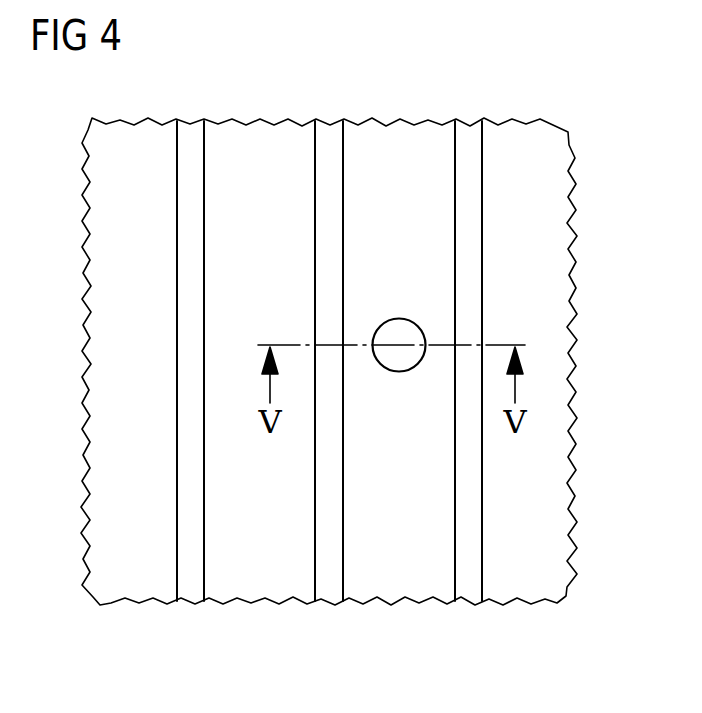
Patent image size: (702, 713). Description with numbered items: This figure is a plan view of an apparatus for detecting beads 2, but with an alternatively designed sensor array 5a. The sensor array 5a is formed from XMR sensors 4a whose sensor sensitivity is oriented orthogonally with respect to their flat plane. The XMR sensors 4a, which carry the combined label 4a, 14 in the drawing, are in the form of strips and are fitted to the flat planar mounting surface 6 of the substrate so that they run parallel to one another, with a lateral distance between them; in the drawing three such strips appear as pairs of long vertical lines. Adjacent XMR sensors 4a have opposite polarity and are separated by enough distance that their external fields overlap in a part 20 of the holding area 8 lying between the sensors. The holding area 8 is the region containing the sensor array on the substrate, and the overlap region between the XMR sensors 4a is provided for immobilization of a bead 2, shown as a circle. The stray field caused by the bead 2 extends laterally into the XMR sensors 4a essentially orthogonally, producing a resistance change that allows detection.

The bead 2 is at (398, 325).
The XMR sensor 4a is at (192, 132).
The rib 14 is at (334, 329).
The sensor array 5a is at (152, 567).
The mounting surface 6 is at (290, 597).
The holding area 8 is at (514, 276).
The part of the holding area 20 is at (240, 598).